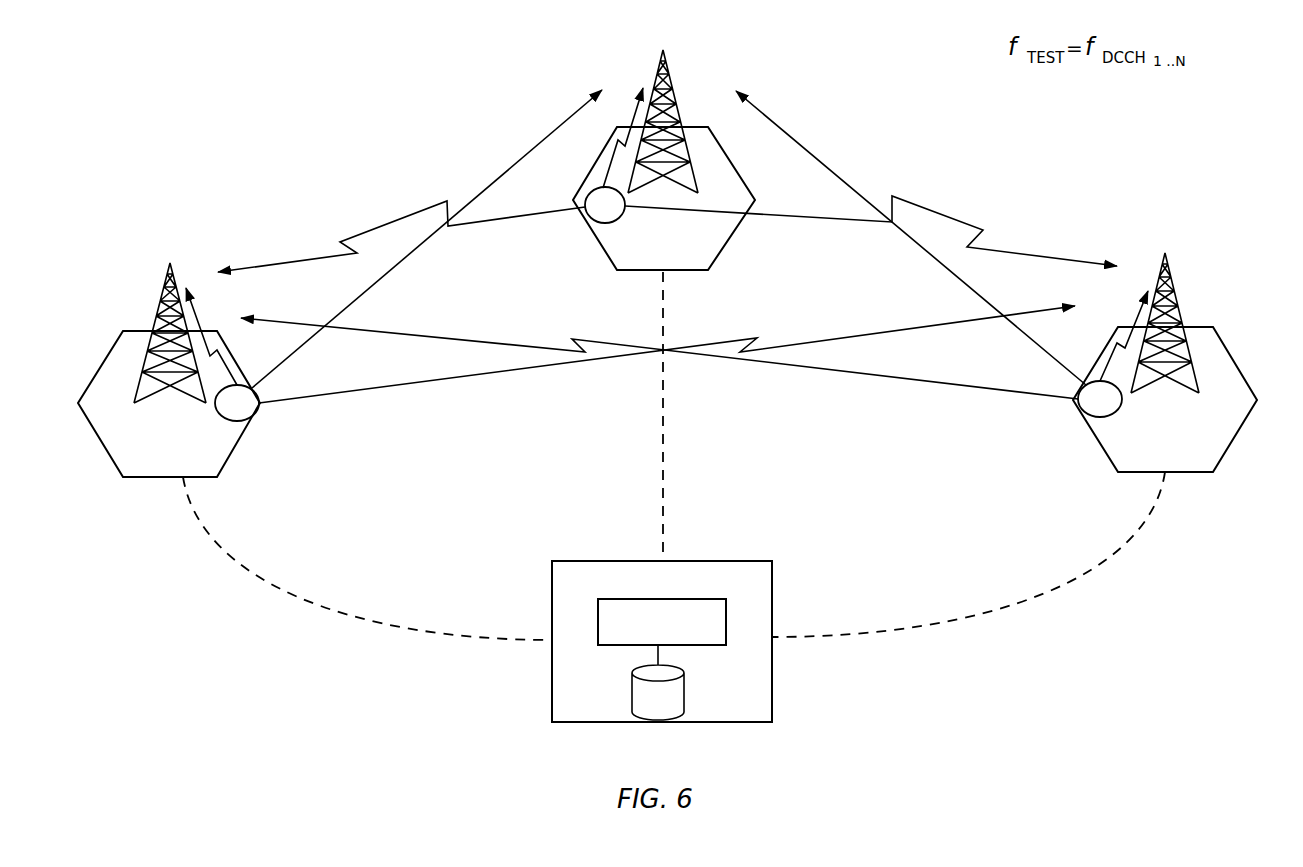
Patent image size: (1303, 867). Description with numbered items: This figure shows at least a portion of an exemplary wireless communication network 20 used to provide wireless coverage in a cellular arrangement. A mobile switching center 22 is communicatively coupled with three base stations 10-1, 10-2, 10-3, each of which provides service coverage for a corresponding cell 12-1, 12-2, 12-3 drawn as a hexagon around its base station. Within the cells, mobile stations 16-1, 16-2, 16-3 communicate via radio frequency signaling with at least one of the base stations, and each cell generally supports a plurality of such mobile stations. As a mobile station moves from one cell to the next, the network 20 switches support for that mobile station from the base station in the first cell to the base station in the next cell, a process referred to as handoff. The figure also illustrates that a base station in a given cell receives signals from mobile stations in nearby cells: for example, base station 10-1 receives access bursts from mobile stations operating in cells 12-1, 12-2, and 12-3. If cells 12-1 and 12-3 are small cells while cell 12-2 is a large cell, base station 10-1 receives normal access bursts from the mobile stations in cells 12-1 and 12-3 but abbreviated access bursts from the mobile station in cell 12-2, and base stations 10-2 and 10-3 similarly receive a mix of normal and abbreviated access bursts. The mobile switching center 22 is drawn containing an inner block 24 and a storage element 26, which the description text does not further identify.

The wireless communication network 20 is at (245, 142).
The base station 10-1 is at (667, 60).
The base station 10-2 is at (1170, 276).
The base station 10-3 is at (160, 295).
The cell 12-1 is at (738, 236).
The cell 12-2 is at (1235, 438).
The cell 12-3 is at (105, 450).
The mobile station 16-1 is at (600, 224).
The mobile station 16-2 is at (1095, 418).
The mobile station 16-3 is at (244, 421).
The mobile switching center 22 is at (570, 724).
The processor 24 is at (726, 598).
The database 26 is at (641, 708).